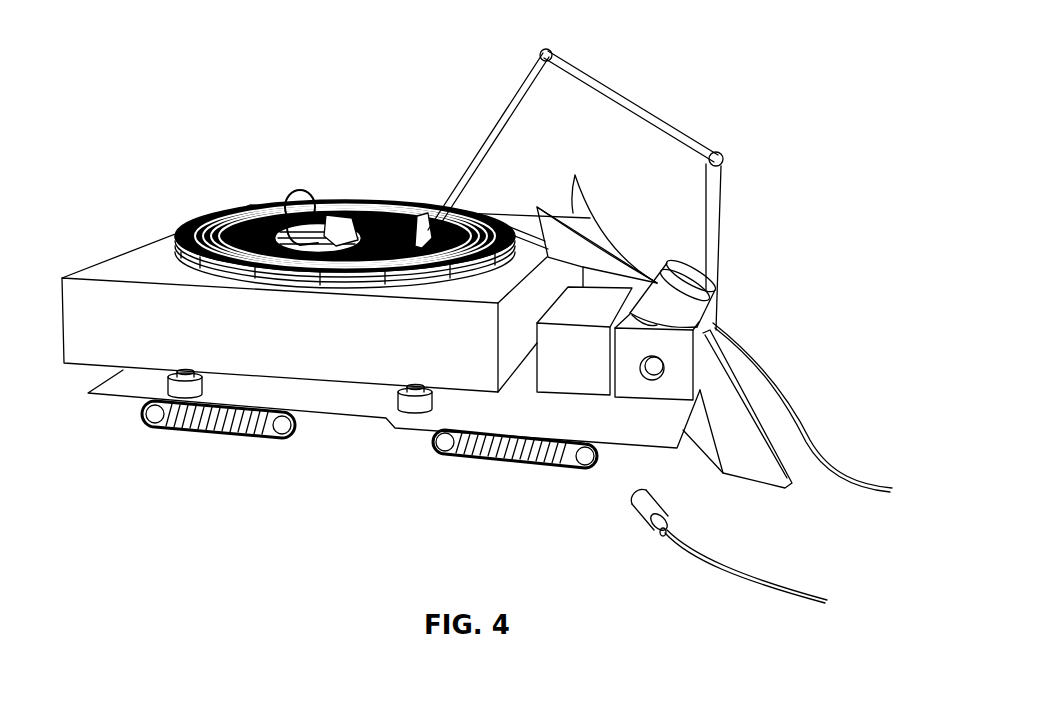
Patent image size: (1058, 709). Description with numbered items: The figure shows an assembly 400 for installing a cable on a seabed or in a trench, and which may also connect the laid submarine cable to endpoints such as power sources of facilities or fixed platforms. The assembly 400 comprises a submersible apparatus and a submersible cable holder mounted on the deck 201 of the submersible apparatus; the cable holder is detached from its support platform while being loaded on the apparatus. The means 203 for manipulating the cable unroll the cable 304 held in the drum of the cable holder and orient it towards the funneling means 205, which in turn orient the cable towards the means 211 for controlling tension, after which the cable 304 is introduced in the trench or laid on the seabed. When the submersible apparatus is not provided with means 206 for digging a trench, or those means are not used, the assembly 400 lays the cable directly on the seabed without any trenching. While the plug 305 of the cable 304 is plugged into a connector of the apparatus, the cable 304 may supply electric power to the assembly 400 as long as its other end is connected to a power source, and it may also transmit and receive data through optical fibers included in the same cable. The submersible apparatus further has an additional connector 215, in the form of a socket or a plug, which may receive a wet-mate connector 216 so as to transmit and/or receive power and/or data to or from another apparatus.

The assembly 400 is at (157, 213).
The deck 201 is at (123, 379).
The means for manipulating the cable 203 is at (647, 112).
The funneling means 205 is at (583, 223).
The means for digging a trench 206 is at (757, 470).
The means for controlling tension 211 is at (700, 280).
The connector 215 is at (652, 373).
The wet-mate connector 216 is at (637, 514).
The cable 304 is at (792, 425).
The plug 305 is at (331, 237).